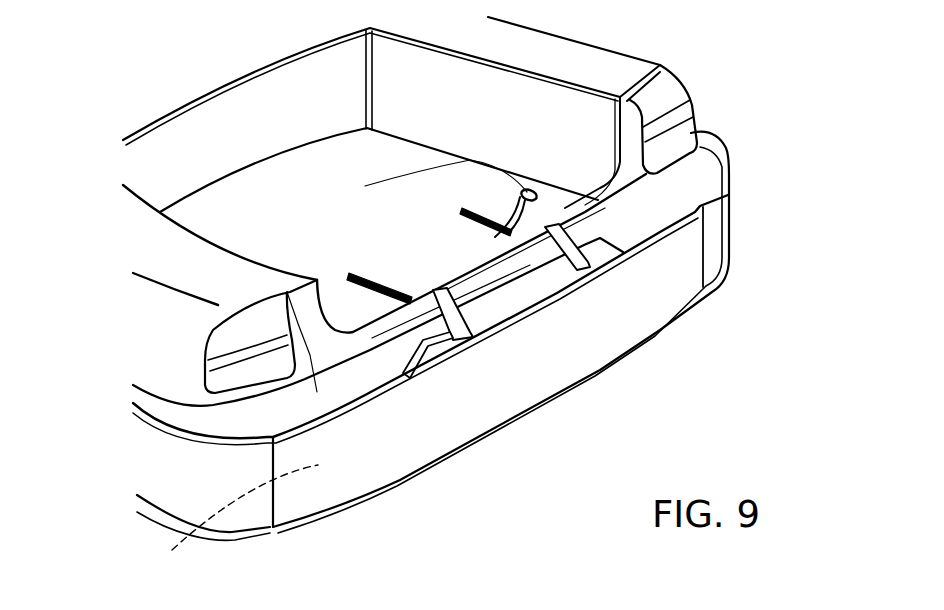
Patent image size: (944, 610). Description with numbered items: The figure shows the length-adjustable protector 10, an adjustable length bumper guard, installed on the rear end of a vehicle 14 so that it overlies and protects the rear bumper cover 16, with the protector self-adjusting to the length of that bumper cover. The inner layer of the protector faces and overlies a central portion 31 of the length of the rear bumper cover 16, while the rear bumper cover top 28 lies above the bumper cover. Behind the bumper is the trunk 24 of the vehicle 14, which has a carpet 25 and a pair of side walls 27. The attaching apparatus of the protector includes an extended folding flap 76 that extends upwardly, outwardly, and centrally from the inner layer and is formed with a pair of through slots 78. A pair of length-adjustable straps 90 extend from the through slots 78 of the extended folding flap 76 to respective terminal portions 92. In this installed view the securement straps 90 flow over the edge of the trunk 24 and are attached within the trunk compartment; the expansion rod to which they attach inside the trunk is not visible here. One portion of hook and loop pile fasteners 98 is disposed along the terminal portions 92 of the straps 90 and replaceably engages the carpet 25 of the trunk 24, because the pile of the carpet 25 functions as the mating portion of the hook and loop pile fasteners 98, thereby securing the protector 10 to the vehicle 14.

The length-adjustable protector 10 is at (762, 241).
The vehicle 14 is at (167, 290).
The rear bumper cover 16 is at (229, 500).
The trunk 24 is at (292, 209).
The carpet 25 is at (428, 204).
The side walls 27 is at (421, 90).
The rear bumper cover top 28 is at (287, 292).
The central portion 31 is at (273, 542).
The extended folding flap 76 is at (510, 315).
The through slots 78 is at (477, 310).
The straps 90 is at (352, 276).
The terminal portions 92 is at (347, 275).
The hook and loop pile fasteners 98 is at (528, 192).